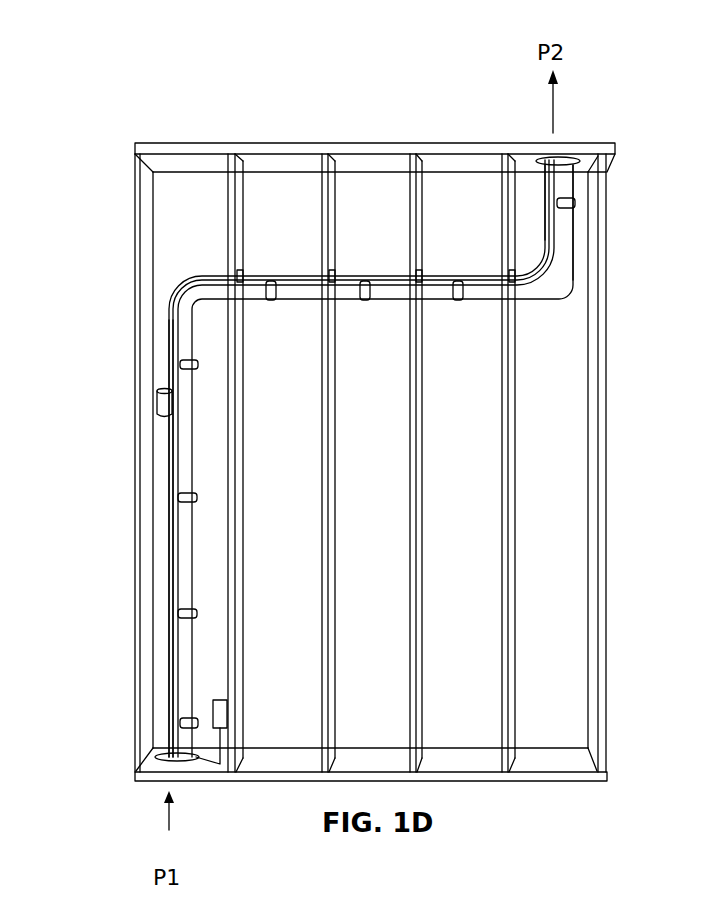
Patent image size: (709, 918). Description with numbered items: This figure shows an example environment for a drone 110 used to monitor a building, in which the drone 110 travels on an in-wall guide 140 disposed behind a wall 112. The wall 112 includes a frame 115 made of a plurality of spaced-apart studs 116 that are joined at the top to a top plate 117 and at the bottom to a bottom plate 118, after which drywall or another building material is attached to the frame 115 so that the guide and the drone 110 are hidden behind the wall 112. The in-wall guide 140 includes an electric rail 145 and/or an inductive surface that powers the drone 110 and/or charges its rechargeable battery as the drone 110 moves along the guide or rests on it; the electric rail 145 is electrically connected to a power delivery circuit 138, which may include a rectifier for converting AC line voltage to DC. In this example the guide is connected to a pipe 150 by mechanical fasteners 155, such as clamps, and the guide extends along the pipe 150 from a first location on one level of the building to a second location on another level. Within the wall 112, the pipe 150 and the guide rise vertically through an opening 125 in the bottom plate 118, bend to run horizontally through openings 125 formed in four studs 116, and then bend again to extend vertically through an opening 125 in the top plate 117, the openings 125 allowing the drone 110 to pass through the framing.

The wall 112 is at (387, 456).
The frame 115 is at (122, 152).
The studs 116 is at (228, 205).
The top plate 117 is at (240, 142).
The bottom plate 118 is at (448, 767).
The openings 125 is at (540, 150).
The electric rail 145 is at (173, 312).
The in-wall guide 140 is at (168, 487).
The pipe 150 is at (565, 255).
The mechanical fasteners 155 is at (192, 494).
The drone 110 is at (168, 412).
The power delivery circuit 138 is at (213, 712).